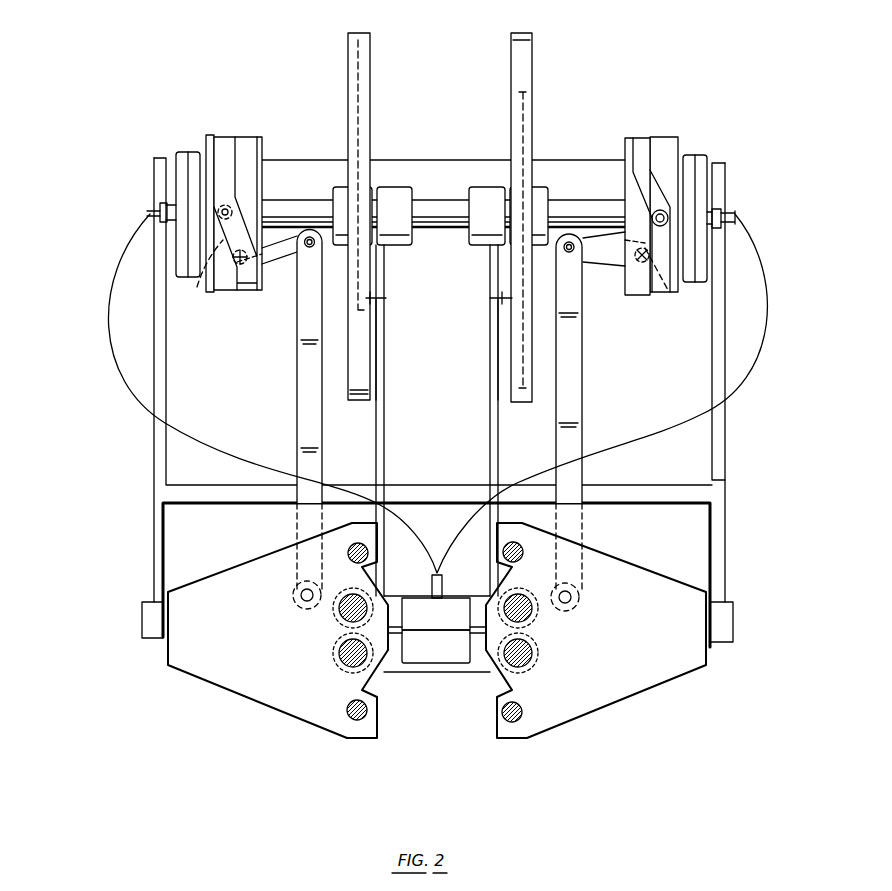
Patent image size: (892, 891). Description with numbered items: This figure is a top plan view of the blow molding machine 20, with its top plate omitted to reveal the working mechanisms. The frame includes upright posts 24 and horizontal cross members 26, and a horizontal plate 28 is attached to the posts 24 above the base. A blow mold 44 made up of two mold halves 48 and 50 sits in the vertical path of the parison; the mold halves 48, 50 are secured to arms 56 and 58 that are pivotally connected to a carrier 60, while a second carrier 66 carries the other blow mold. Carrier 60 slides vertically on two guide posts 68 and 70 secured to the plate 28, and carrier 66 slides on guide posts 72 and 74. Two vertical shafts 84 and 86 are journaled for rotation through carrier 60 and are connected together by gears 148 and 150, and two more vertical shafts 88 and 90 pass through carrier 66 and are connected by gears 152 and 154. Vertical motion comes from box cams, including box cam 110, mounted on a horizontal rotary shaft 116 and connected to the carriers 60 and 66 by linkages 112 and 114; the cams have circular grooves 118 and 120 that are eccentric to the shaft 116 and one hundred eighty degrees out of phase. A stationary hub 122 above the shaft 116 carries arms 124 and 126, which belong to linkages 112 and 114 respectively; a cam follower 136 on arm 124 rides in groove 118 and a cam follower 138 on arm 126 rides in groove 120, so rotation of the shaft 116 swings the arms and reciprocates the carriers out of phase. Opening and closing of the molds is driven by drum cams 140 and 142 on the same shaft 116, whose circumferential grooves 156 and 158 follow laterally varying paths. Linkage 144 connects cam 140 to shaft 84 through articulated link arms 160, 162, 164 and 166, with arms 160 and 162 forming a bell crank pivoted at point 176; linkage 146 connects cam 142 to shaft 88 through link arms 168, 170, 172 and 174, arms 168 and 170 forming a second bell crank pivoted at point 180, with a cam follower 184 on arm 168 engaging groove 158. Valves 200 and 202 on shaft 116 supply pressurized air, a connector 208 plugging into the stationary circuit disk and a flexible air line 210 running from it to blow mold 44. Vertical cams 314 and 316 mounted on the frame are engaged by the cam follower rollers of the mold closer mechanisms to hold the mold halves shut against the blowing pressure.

The blow molding machine 20 is at (657, 86).
The upright posts 24 is at (152, 600).
The horizontal cross members 26 is at (166, 367).
The horizontal plate 28 is at (660, 490).
The blow mold 44 is at (431, 590).
The mold half 48 is at (412, 623).
The mold half 50 is at (412, 655).
The arm 56 is at (476, 595).
The arm 58 is at (478, 673).
The carrier 60 is at (640, 565).
The carrier 66 is at (235, 570).
The guide post 68 is at (515, 540).
The guide post 70 is at (522, 712).
The guide post 72 is at (366, 545).
The guide post 74 is at (347, 709).
The vertical shaft 84 is at (521, 594).
The vertical shaft 86 is at (530, 662).
The vertical shaft 88 is at (346, 594).
The vertical shaft 90 is at (340, 661).
The box cam 110 is at (362, 30).
The linkage 112 is at (489, 450).
The linkage 114 is at (386, 465).
The horizontal rotary shaft 116 is at (322, 198).
The cam groove 118 is at (522, 30).
The cam groove 120 is at (355, 103).
The stationary hub 122 is at (437, 211).
The arm 124 is at (495, 347).
The arm 126 is at (379, 347).
The cam follower 136 is at (492, 300).
The cam follower 138 is at (380, 300).
The drum cam 140 is at (670, 135).
The drum cam 142 is at (209, 132).
The linkage 144 is at (584, 393).
The linkage 146 is at (295, 412).
The gear 148 is at (533, 620).
The gear 150 is at (537, 650).
The gear 152 is at (338, 622).
The gear 154 is at (340, 647).
The cam groove 156 is at (645, 148).
The cam groove 158 is at (233, 147).
The link arm 160 is at (668, 286).
The link arm 162 is at (598, 270).
The link arm 164 is at (575, 342).
The link arm 166 is at (572, 578).
The link arm 168 is at (205, 292).
The link arm 170 is at (263, 272).
The link arm 172 is at (300, 377).
The link arm 174 is at (300, 572).
The pivot point 176 is at (638, 290).
The pivot point 180 is at (238, 300).
The cam follower 184 is at (232, 205).
The valve 200 is at (706, 151).
The valve 202 is at (177, 149).
The connector 208 is at (738, 215).
The flexible air line 210 is at (762, 318).
The vertical cam 314 is at (733, 630).
The vertical cam 316 is at (145, 625).